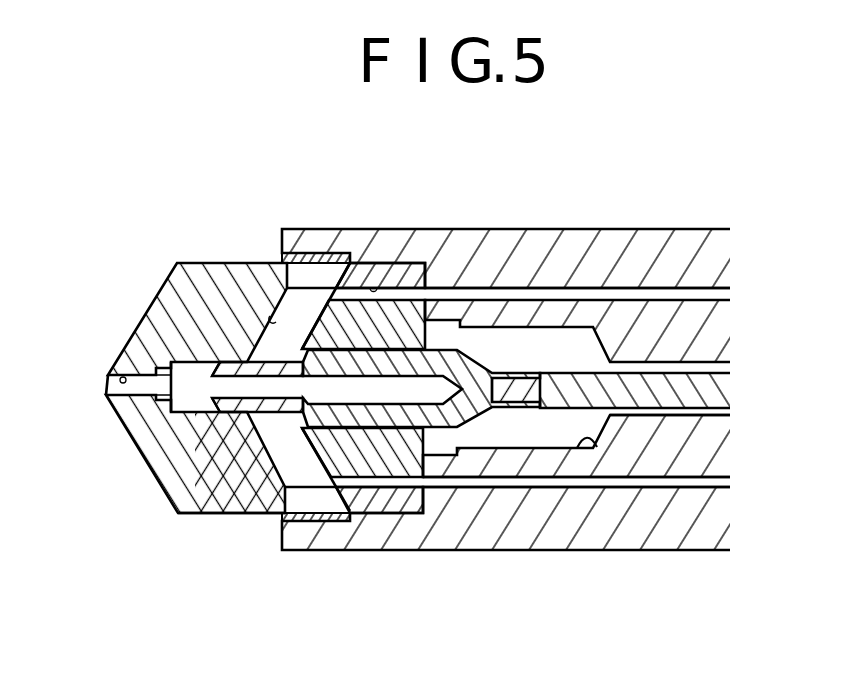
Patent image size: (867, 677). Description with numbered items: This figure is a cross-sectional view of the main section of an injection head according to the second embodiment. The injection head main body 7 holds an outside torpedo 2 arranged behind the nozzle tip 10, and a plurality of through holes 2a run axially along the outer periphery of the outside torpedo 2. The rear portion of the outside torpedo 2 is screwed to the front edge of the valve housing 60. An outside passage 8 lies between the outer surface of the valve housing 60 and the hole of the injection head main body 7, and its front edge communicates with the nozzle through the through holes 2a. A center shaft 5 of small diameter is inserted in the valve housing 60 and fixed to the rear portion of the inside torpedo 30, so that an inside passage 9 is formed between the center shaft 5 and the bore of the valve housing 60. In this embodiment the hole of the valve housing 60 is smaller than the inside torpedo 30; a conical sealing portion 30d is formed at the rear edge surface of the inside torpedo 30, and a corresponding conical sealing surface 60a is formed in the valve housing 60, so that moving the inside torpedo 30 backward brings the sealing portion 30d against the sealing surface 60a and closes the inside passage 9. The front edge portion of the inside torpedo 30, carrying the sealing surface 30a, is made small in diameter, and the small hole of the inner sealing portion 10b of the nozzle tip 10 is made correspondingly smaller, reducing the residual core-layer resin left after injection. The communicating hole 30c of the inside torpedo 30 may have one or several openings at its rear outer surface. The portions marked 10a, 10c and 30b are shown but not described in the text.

The outside torpedo 2 is at (407, 262).
The through holes 2a is at (374, 288).
The center shaft 5 is at (643, 383).
The injection head main body 7 is at (683, 216).
The outside passage 8 is at (610, 480).
The inside passage 9 is at (653, 414).
The nozzle tip 10 is at (150, 452).
The plug tip 10a is at (167, 362).
The inner sealing portion 10b is at (252, 298).
The plug bore 10c is at (157, 400).
The inside torpedo 30 is at (355, 428).
The sealing surface 30a is at (200, 512).
The contact front chamfer 30b is at (213, 377).
The communicating hole 30c is at (292, 402).
The conical sealing portion 30d is at (538, 420).
The valve housing 60 is at (680, 466).
The conical sealing surface 60a is at (588, 437).